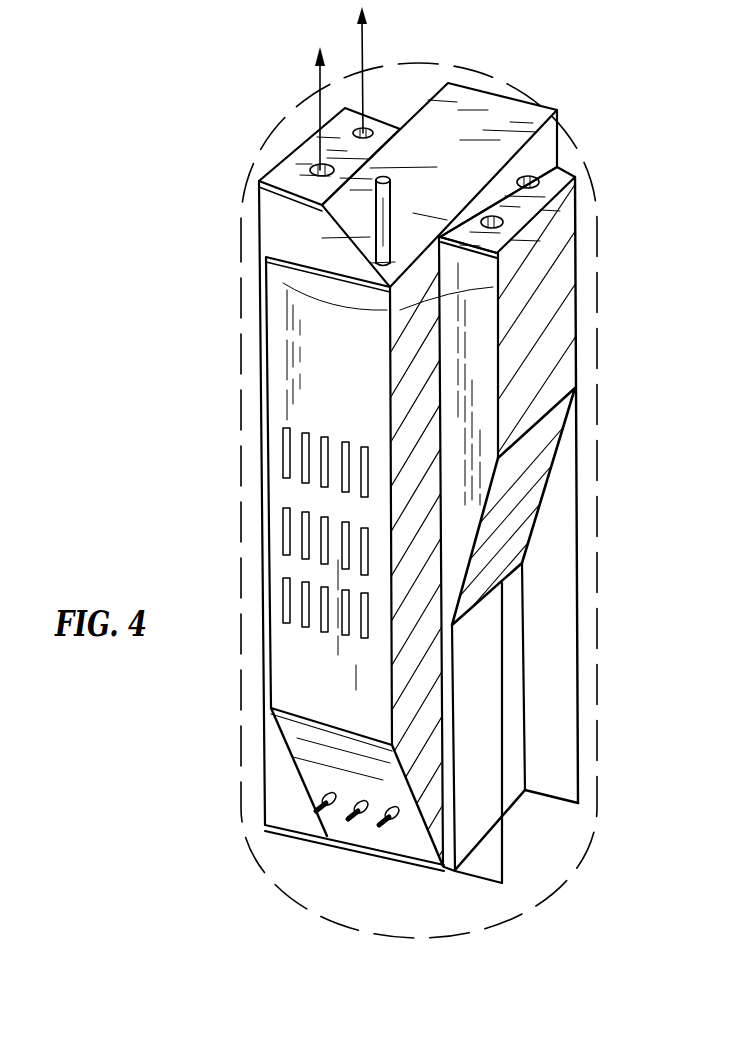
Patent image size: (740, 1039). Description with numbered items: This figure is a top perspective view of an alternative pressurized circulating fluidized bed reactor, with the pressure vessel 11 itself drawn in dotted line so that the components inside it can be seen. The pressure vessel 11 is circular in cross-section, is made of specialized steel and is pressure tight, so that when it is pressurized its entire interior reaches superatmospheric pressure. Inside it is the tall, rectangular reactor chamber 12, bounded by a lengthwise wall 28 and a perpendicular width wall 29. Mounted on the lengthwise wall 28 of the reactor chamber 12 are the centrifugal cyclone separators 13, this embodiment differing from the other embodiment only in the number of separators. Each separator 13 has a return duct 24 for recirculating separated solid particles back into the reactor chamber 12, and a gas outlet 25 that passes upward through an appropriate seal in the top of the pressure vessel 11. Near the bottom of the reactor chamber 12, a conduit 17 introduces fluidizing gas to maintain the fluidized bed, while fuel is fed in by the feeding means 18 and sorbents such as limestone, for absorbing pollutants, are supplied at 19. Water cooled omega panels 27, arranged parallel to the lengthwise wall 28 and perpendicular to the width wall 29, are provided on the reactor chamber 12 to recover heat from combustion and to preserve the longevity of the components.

The pressure vessel 11 is at (603, 470).
The reactor chamber 12 is at (276, 230).
The centrifugal separator 13 is at (279, 150).
The conduit 17 is at (380, 845).
The fuel feeding means 18 is at (348, 819).
The sorbent feeding means 19 is at (316, 811).
The return duct 24 is at (447, 641).
The gas outlet 25 is at (363, 90).
The omega panels 27 is at (283, 470).
The lengthwise wall 28 is at (406, 344).
The width wall 29 is at (292, 352).